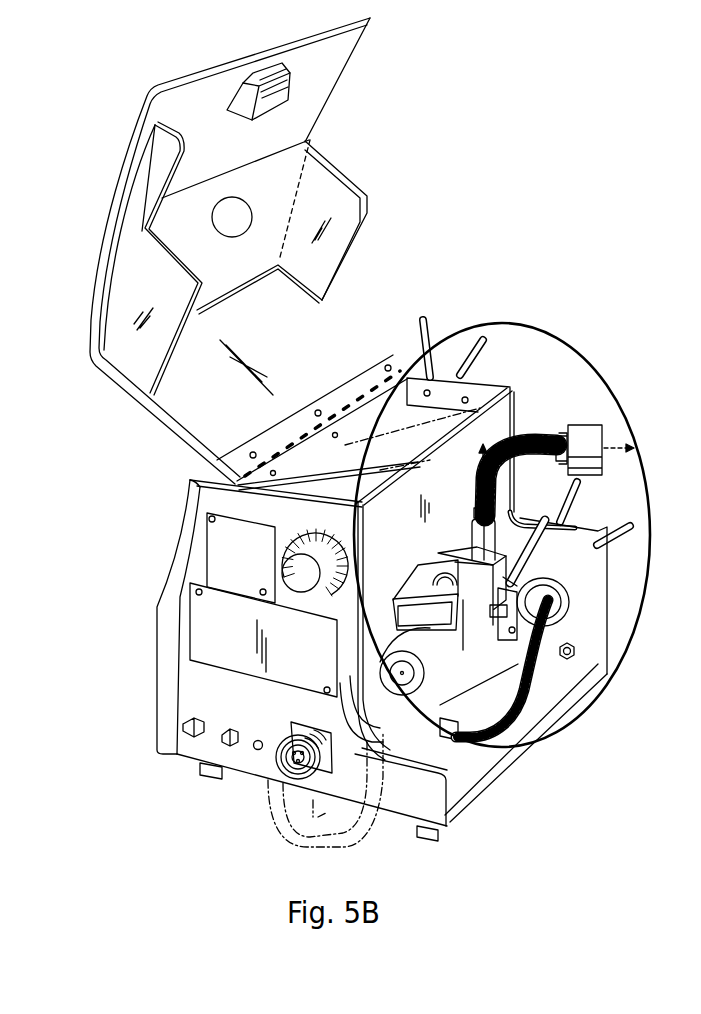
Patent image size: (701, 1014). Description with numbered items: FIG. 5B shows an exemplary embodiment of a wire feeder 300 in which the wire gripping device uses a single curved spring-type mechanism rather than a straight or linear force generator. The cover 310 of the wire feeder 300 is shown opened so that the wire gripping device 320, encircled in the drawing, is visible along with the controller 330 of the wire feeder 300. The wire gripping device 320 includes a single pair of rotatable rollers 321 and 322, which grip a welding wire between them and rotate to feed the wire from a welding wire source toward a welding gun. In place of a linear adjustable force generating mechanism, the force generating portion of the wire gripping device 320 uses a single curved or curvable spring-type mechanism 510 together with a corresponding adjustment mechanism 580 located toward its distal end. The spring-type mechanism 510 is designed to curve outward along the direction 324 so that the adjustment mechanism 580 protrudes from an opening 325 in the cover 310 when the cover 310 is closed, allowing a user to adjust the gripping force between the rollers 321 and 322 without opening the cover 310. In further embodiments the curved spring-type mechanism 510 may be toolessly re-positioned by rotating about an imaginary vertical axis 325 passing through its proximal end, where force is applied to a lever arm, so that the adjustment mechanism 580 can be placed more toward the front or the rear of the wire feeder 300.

The wire feeder 300 is at (372, 516).
The cover 310 is at (148, 133).
The wire gripping device 320 is at (476, 750).
The rotatable roller 321 is at (428, 564).
The rotatable roller 322 is at (512, 727).
The direction 324 is at (617, 452).
The opening 325 is at (240, 198).
The controller 330 is at (198, 684).
The curved spring-type mechanism 510 is at (529, 440).
The adjustment mechanism 580 is at (593, 425).